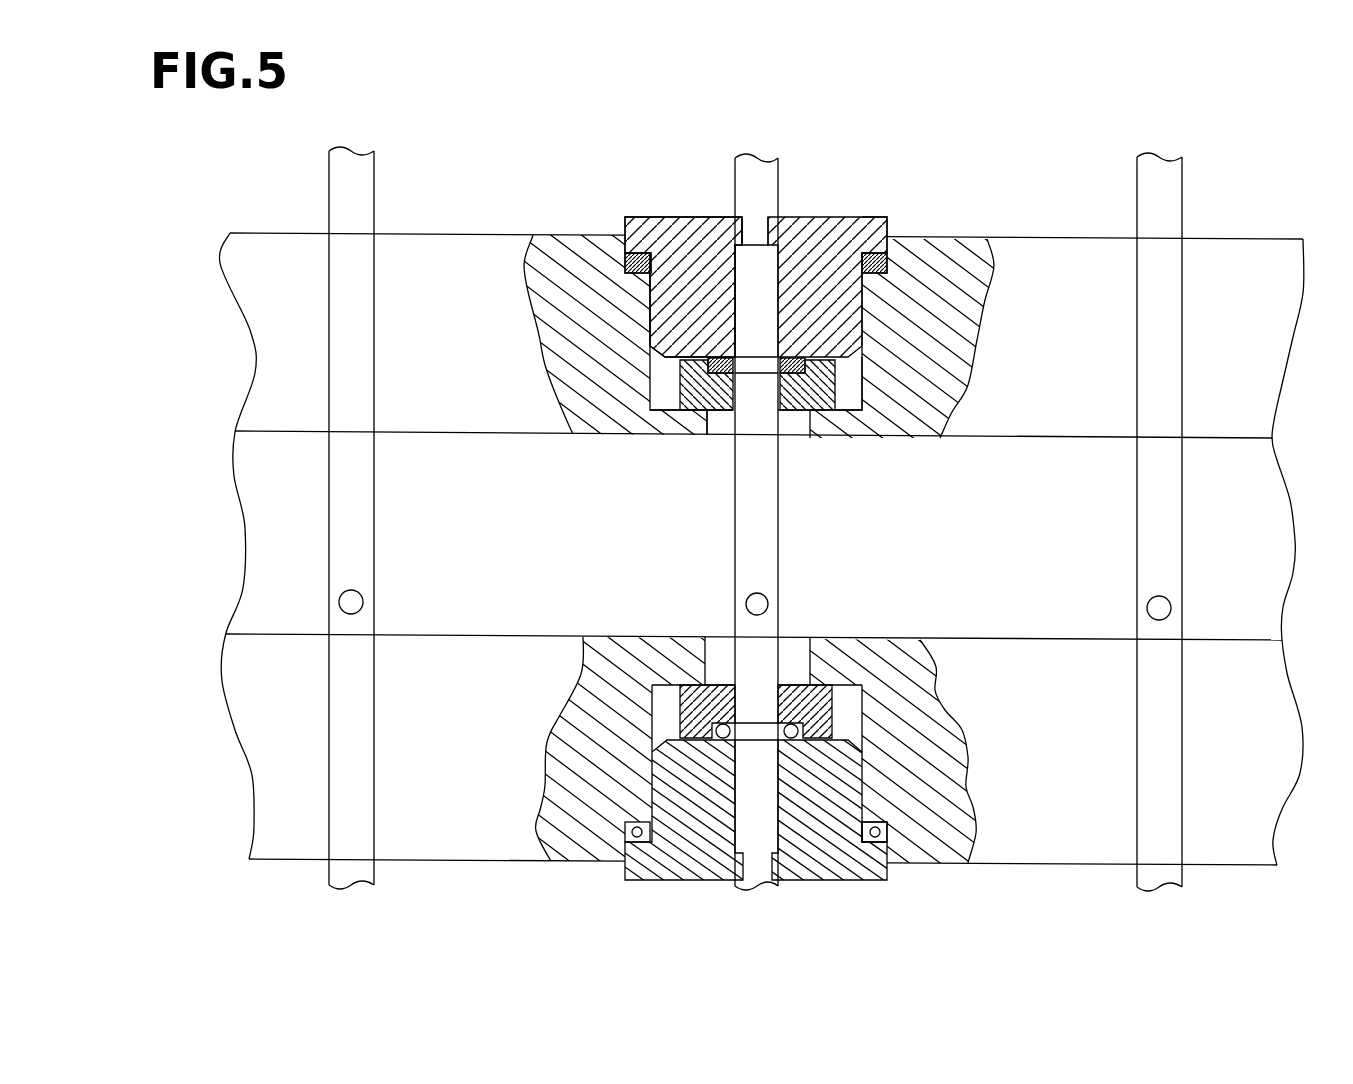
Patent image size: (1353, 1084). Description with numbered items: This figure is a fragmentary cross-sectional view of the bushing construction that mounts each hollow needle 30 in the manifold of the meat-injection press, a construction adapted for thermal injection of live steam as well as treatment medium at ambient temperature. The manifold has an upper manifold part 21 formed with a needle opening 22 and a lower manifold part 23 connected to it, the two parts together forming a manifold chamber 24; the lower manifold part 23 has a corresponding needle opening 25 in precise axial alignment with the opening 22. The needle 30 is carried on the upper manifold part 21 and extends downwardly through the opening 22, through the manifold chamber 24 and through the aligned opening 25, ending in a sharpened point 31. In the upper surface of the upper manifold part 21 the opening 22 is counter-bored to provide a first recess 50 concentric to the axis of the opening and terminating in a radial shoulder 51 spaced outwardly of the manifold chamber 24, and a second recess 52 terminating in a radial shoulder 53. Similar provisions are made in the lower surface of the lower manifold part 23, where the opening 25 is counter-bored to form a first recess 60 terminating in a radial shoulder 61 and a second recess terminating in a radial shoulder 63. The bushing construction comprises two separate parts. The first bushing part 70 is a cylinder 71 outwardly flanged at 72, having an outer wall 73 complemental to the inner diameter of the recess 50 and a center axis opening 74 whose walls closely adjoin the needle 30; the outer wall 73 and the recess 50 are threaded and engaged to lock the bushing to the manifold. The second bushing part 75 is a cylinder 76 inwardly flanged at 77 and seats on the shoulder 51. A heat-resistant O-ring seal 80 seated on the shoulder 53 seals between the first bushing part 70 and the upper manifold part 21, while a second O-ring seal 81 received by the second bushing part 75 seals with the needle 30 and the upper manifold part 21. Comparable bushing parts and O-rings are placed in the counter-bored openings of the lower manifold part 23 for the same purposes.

The upper manifold part 21 is at (287, 268).
The needle opening 22 is at (797, 420).
The lower manifold part 23 is at (455, 688).
The manifold chamber 24 is at (1085, 462).
The needle opening 25 is at (861, 650).
The hollow needle 30 is at (780, 549).
The sharpened point 31 is at (746, 603).
The first recess 50 is at (862, 352).
The radial shoulder 51 is at (867, 377).
The second recess 52 is at (624, 250).
The radial shoulder 53 is at (637, 272).
The first recess 60 is at (862, 720).
The radial shoulder 61 is at (835, 717).
The radial shoulder 63 is at (862, 826).
The first bushing part 70 is at (812, 212).
The cylinder 71 is at (673, 307).
The outward flange 72 is at (888, 224).
The outer wall 73 is at (652, 328).
The center axis opening 74 is at (748, 267).
The second bushing part 75 is at (722, 414).
The cylinder 76 is at (692, 390).
The inward flange 77 is at (793, 393).
The O-ring seal 80 is at (625, 264).
The O-ring seal 81 is at (700, 362).